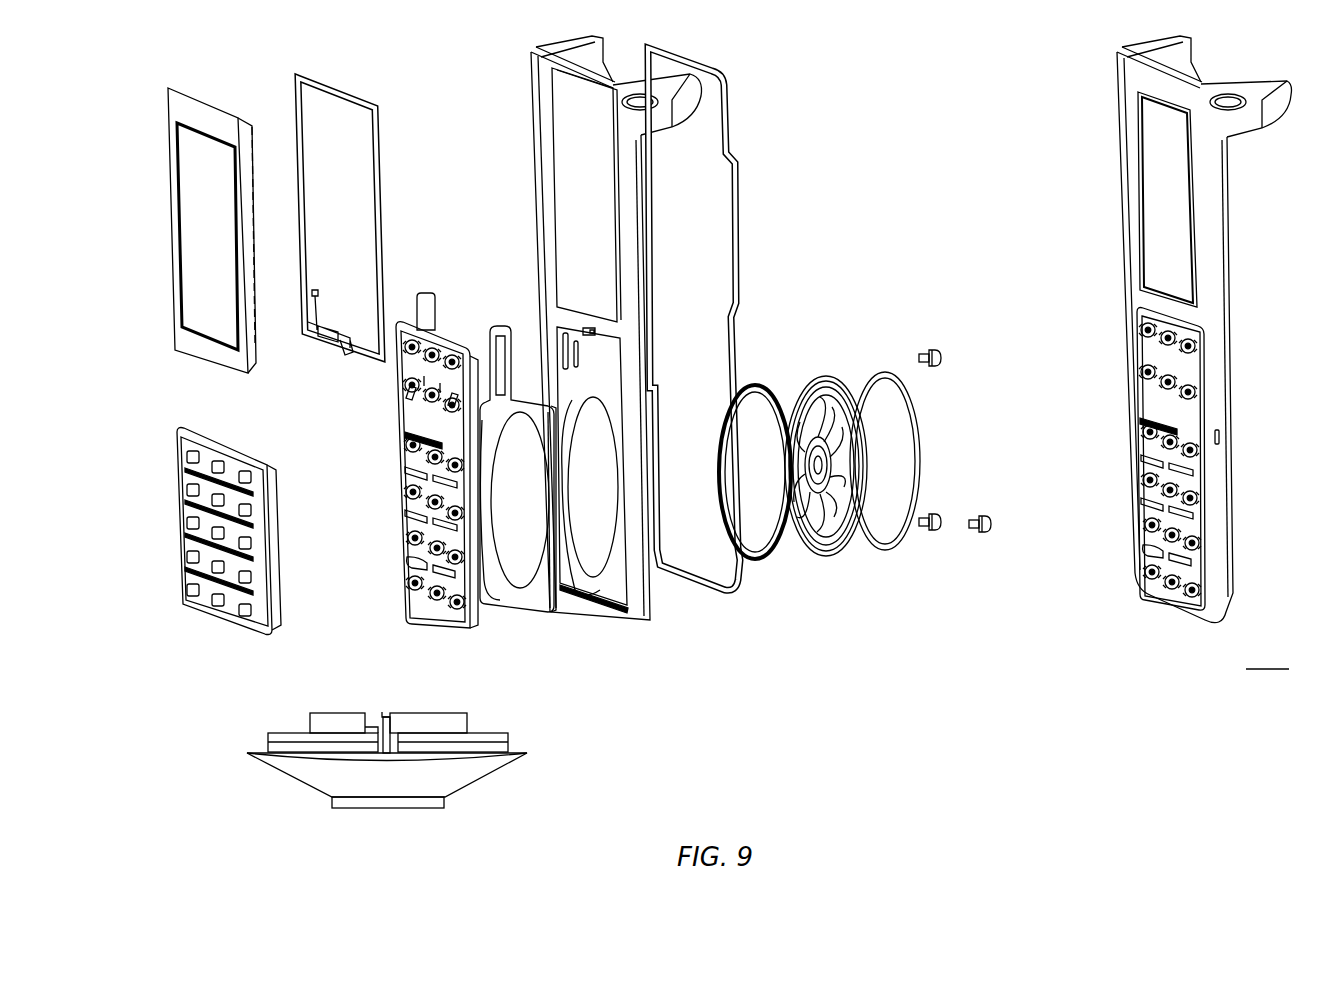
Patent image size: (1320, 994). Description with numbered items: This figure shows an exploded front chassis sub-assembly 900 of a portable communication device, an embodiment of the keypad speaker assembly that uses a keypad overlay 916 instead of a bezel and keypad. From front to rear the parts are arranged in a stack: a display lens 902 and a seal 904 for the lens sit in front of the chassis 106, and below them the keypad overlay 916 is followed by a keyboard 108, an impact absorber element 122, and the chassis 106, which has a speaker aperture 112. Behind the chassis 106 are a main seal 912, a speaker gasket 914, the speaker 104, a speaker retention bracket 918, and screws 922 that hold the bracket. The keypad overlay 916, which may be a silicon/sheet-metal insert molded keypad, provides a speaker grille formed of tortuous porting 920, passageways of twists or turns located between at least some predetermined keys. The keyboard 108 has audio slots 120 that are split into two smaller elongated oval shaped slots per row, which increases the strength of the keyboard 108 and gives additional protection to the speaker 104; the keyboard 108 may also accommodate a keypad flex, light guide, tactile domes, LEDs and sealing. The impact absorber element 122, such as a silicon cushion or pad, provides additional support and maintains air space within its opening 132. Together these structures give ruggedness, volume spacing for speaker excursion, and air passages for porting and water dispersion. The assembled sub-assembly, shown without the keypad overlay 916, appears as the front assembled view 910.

The front chassis sub-assembly 900 is at (1267, 656).
The display lens 902 is at (208, 103).
The seal 904 is at (340, 92).
The front assembled view 910 is at (1251, 79).
The main seal 912 is at (699, 63).
The speaker gasket 914 is at (762, 387).
The speaker retention bracket 918 is at (888, 551).
The screws 922 is at (975, 537).
The keypad overlay 916 is at (194, 592).
The tortuous porting 920 is at (185, 470).
The speaker 104 is at (816, 378).
The chassis 106 is at (628, 620).
The keyboard 108 is at (407, 597).
The speaker aperture 112 is at (602, 593).
The audio slots 120 is at (405, 435).
The impact absorber element 122 is at (510, 606).
The opening 132 is at (559, 613).